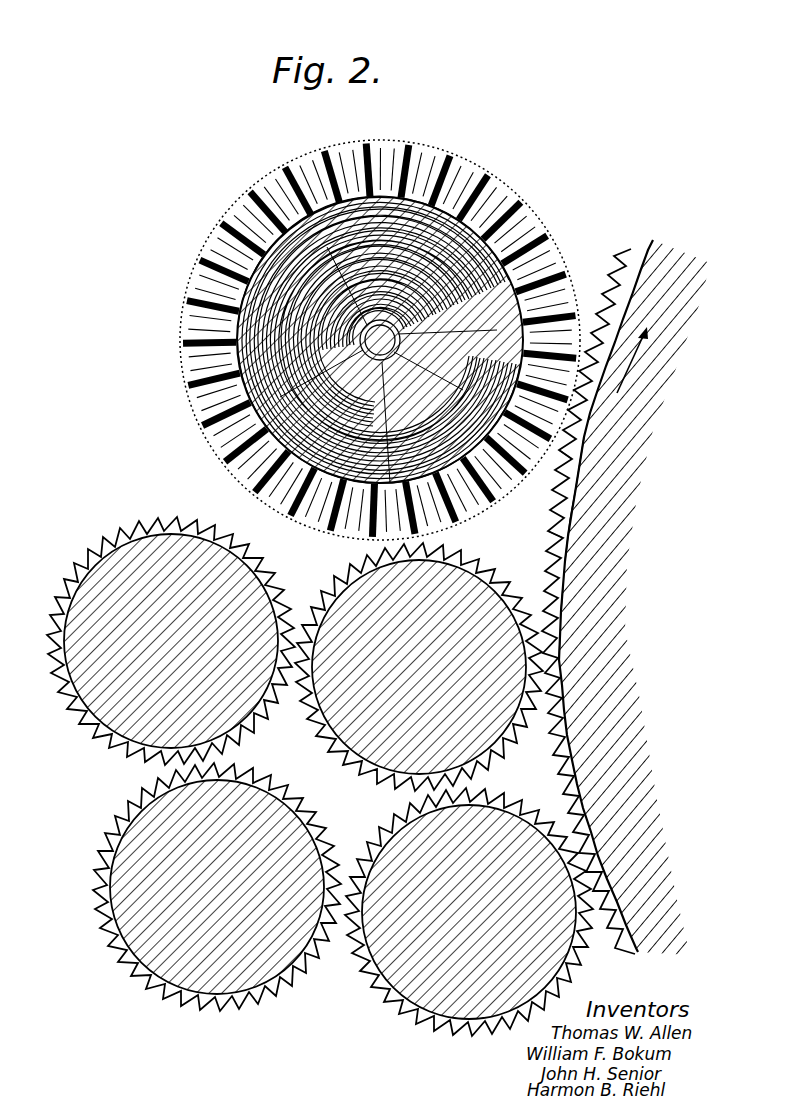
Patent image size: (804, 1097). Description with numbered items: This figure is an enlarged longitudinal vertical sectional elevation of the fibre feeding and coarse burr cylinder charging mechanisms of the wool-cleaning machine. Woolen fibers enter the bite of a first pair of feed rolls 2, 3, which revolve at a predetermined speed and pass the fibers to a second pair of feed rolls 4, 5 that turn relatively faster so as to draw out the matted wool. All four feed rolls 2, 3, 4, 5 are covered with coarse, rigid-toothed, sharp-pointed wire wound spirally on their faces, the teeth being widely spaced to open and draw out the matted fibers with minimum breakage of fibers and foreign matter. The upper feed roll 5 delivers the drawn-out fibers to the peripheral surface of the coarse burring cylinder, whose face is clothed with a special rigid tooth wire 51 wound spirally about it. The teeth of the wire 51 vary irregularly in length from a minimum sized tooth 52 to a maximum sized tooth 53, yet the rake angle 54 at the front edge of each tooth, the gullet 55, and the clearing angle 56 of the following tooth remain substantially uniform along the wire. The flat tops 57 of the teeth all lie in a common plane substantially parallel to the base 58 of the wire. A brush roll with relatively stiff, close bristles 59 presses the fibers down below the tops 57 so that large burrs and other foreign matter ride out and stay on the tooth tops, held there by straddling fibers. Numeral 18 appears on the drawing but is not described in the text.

The bristles 59 is at (548, 270).
The feed roll 2 is at (157, 822).
The feed roll 3 is at (122, 563).
The feed roll 4 is at (385, 958).
The upper feed roll 5 is at (390, 587).
The casing wall 18 is at (634, 597).
The rigid tooth wire 51 is at (557, 568).
The minimum sized tooth 52 is at (560, 540).
The maximum sized tooth 53 is at (558, 618).
The rake angle 54 is at (573, 503).
The gullet 55 is at (573, 477).
The clearing angle 56 is at (563, 473).
The flat tops of the teeth 57 is at (556, 524).
The base of the wire 58 is at (570, 522).